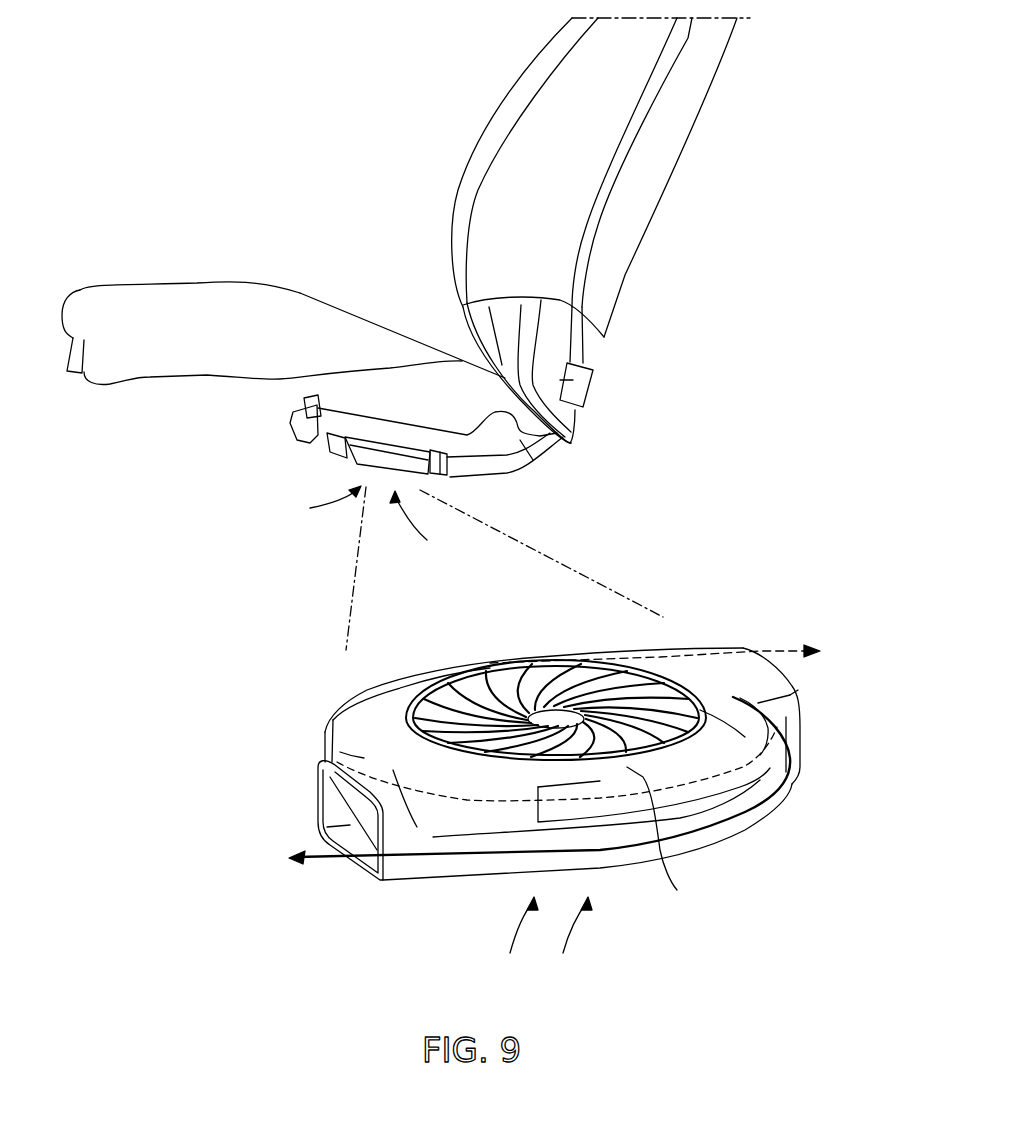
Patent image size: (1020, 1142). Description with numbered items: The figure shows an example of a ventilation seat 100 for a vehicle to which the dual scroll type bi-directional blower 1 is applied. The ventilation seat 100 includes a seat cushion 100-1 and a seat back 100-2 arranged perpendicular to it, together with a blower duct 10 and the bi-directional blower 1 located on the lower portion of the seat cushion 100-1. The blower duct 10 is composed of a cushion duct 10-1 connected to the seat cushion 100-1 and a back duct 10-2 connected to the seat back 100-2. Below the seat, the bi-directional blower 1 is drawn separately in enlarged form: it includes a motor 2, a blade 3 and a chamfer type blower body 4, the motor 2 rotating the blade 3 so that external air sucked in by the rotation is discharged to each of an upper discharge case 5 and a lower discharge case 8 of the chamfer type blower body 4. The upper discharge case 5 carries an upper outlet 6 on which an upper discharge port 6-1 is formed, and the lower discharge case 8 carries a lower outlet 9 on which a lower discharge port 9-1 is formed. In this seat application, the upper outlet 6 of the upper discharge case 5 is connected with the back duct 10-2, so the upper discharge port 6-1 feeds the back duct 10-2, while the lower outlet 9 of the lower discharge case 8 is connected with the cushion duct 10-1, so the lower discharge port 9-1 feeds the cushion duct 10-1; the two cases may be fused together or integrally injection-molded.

The bi-directional blower 1 is at (360, 457).
The motor 2 is at (563, 715).
The blade 3 is at (460, 688).
The chamfer type blower body 4 is at (695, 933).
The upper discharge case 5 is at (662, 870).
The upper outlet 6 is at (450, 474).
The upper discharge port 6-1 is at (801, 722).
The lower discharge case 8 is at (610, 860).
The lower outlet 9 is at (350, 460).
The lower discharge port 9-1 is at (330, 815).
The blower duct 10 is at (377, 233).
The cushion duct 10-1 is at (310, 400).
The back duct 10-2 is at (467, 307).
The ventilation seat 100 is at (238, 179).
The seat cushion 100-1 is at (203, 293).
The seat back 100-2 is at (492, 133).